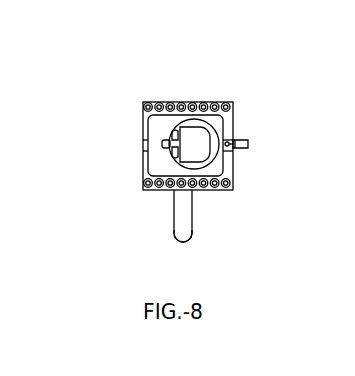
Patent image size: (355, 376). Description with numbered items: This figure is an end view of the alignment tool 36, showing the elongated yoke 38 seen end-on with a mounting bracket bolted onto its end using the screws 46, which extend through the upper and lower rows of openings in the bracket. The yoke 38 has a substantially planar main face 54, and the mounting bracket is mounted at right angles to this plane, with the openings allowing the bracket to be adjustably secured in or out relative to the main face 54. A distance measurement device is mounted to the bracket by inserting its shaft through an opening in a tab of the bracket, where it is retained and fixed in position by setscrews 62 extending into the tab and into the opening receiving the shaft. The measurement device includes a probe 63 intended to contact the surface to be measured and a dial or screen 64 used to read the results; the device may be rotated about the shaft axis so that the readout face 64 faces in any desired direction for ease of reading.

The alignment tool 36 is at (124, 114).
The screws 46 is at (183, 106).
The dial or screen 64 is at (197, 134).
The setscrews 62 is at (229, 142).
The probe 63 is at (248, 140).
The main face 54 is at (192, 208).
The yoke 38 is at (183, 237).